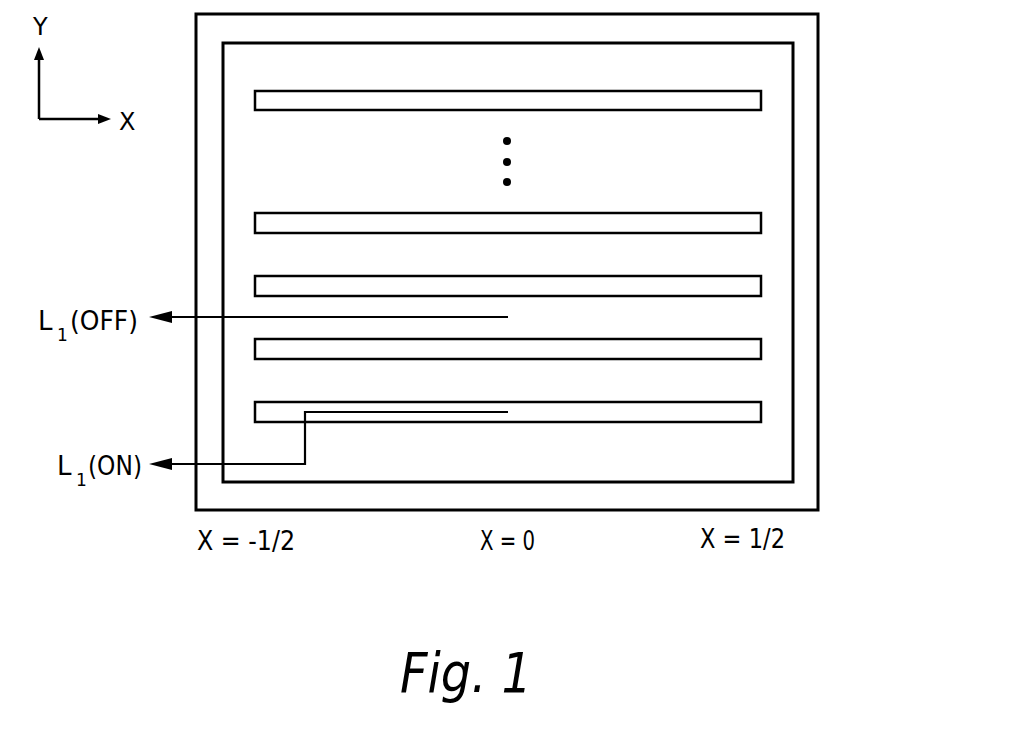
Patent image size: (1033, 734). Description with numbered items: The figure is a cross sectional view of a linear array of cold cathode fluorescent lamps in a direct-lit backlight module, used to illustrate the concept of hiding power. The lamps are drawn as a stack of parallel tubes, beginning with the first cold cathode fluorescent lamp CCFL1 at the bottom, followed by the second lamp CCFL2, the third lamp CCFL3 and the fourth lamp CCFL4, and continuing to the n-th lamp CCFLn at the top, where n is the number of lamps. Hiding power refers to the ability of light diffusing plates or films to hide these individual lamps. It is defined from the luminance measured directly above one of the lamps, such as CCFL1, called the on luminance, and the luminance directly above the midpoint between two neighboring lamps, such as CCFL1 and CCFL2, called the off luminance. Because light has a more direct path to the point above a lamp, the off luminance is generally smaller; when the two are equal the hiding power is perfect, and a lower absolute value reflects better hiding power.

The cold cathode fluorescent lamp CCFL1 is at (581, 413).
The cold cathode fluorescent lamp CCFL2 is at (581, 349).
The cold cathode fluorescent lamp CCFL3 is at (581, 286).
The cold cathode fluorescent lamp CCFL4 is at (581, 223).
The cold cathode fluorescent lamp CCFLn is at (581, 101).